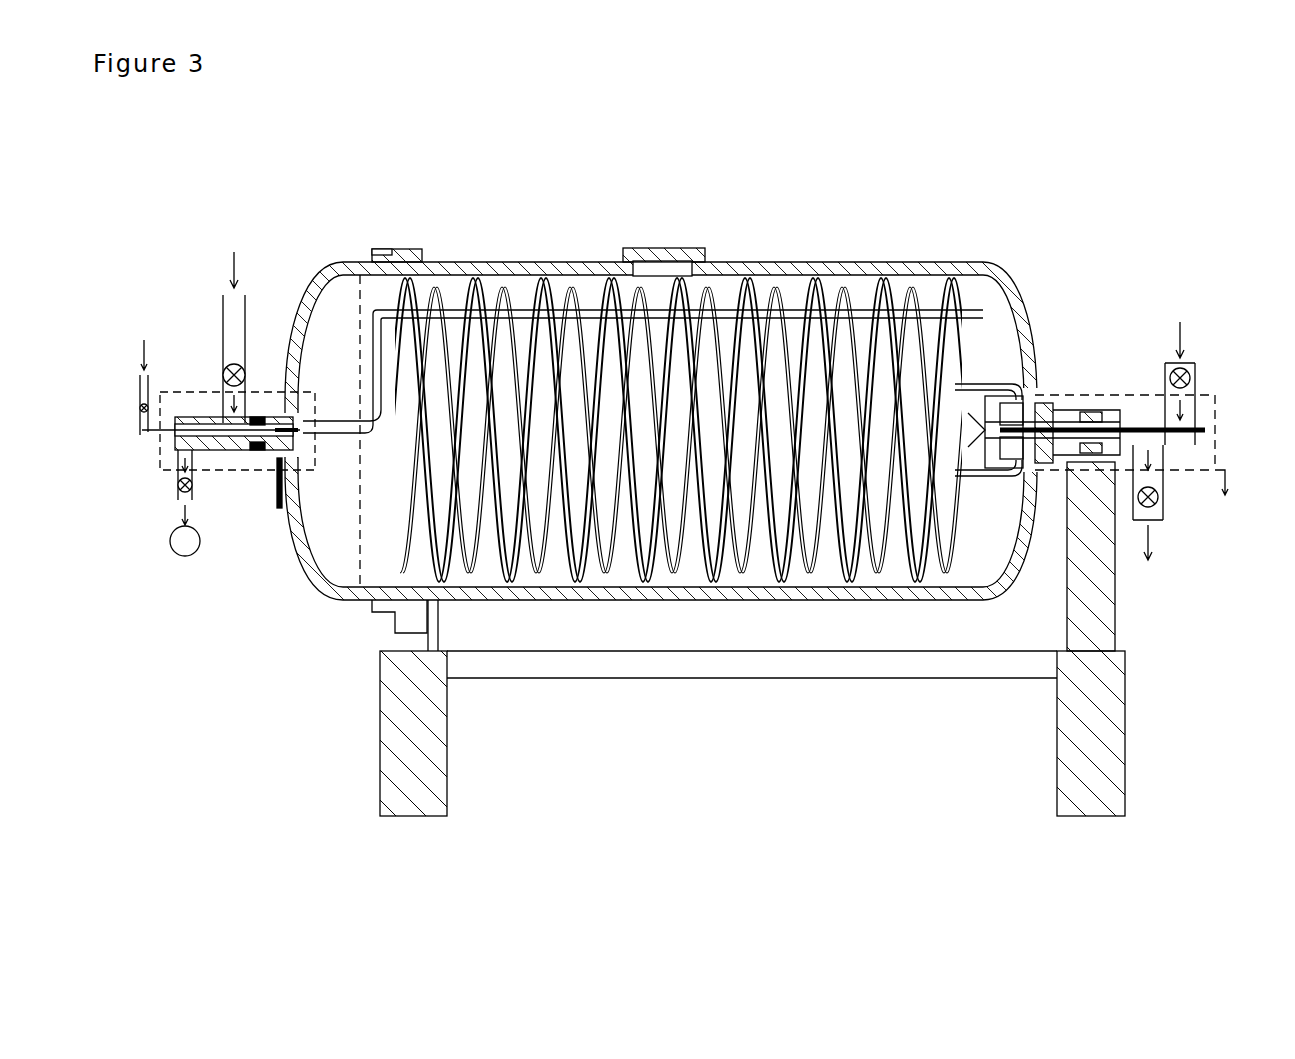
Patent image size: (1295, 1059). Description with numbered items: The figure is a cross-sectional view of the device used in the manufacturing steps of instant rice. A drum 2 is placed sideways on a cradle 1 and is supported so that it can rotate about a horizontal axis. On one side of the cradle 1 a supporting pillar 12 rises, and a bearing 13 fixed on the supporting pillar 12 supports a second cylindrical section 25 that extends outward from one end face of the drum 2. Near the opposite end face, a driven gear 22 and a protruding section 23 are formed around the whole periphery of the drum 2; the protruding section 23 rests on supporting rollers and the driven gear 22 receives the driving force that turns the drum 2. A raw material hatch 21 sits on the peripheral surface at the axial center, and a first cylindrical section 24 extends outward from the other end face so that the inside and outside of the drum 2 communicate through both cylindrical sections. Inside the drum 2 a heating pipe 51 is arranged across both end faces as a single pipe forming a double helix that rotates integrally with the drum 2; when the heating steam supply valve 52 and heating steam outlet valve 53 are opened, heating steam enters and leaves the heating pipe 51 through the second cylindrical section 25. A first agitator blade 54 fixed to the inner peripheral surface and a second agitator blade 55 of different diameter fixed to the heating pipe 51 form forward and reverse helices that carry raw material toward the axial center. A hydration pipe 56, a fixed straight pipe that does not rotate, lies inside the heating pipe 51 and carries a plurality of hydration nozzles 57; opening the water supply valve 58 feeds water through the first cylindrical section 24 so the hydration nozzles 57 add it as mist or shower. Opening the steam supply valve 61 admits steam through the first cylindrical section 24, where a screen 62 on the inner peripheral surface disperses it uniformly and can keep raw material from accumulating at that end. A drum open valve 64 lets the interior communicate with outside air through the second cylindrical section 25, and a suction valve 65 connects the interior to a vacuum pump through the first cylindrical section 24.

The cradle 1 is at (1120, 676).
The drum 2 is at (958, 268).
The supporting pillar 12 is at (1110, 606).
The bearing 13 is at (1075, 465).
The raw material hatch 21 is at (660, 250).
The driven gear 22 is at (372, 250).
The protruding section 23 is at (400, 250).
The first cylindrical section 24 is at (265, 400).
The second cylindrical section 25 is at (1062, 400).
The heating pipe 51 is at (679, 389).
The heating steam supply valve 52 is at (1195, 375).
The heating steam outlet valve 53 is at (1150, 497).
The first agitator blade 54 is at (815, 285).
The second agitator blade 55 is at (875, 290).
The hydration pipe 56 is at (560, 285).
The hydration nozzles 57 is at (770, 290).
The water supply valve 58 is at (140, 410).
The steam supply valve 61 is at (228, 360).
The screen 62 is at (355, 530).
The drum open valve 64 is at (1210, 430).
The suction valve 65 is at (178, 485).